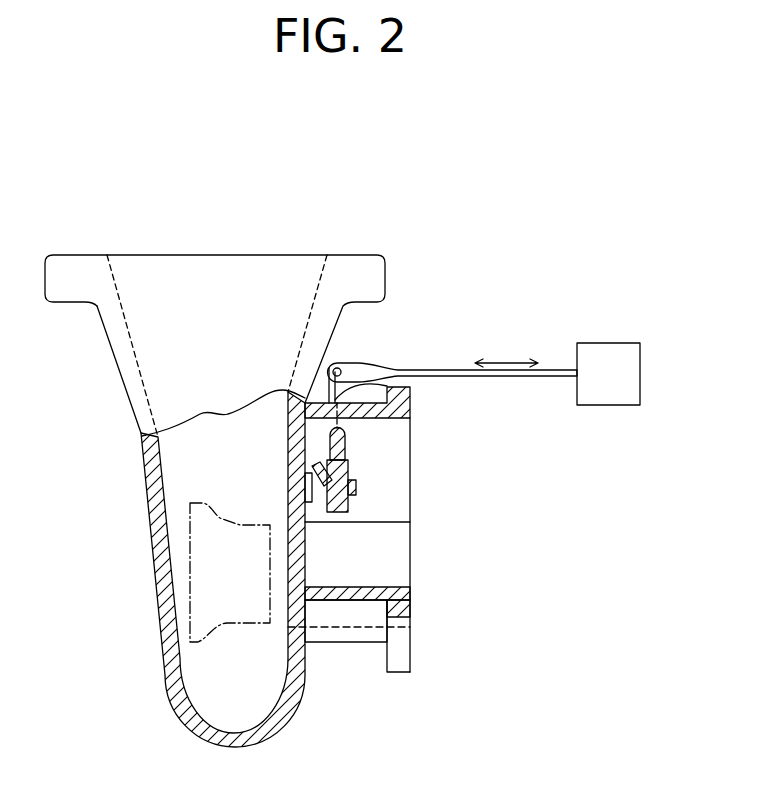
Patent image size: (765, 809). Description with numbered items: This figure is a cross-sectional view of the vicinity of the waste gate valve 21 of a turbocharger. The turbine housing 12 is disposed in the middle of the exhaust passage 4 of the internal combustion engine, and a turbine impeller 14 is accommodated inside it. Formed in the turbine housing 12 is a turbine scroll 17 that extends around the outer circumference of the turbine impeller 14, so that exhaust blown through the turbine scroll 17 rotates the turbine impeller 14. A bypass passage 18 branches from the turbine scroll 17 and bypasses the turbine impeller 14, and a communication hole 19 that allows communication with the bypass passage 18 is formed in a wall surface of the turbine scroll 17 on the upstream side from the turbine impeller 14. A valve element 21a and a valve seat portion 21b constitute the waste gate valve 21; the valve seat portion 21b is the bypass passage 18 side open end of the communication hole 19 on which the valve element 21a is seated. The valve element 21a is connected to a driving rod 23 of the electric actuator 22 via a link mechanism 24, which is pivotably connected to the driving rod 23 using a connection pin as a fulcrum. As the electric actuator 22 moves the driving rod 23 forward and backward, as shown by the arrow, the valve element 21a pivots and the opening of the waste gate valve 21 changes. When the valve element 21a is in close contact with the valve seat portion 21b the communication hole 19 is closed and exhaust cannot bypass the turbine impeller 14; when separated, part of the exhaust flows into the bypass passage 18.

The exhaust passage 4 is at (410, 627).
The turbine housing 12 is at (152, 498).
The turbine impeller 14 is at (231, 626).
The turbine scroll 17 is at (237, 464).
The bypass passage 18 is at (408, 588).
The communication hole 19 is at (302, 499).
The waste gate valve 21 is at (357, 494).
The valve element 21a is at (326, 486).
The valve seat portion 21b is at (316, 500).
The electric actuator 22 is at (608, 406).
The driving rod 23 is at (556, 369).
The link mechanism 24 is at (410, 410).